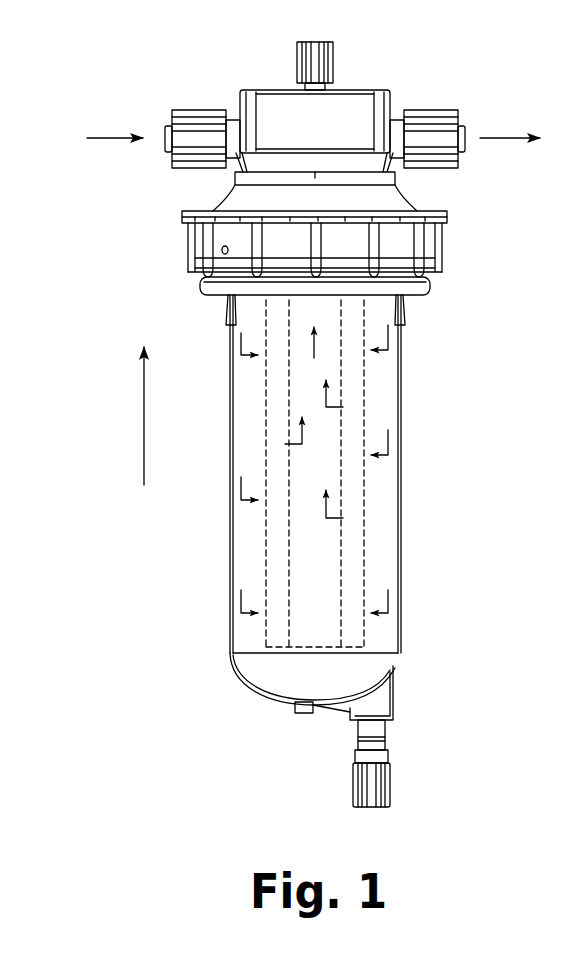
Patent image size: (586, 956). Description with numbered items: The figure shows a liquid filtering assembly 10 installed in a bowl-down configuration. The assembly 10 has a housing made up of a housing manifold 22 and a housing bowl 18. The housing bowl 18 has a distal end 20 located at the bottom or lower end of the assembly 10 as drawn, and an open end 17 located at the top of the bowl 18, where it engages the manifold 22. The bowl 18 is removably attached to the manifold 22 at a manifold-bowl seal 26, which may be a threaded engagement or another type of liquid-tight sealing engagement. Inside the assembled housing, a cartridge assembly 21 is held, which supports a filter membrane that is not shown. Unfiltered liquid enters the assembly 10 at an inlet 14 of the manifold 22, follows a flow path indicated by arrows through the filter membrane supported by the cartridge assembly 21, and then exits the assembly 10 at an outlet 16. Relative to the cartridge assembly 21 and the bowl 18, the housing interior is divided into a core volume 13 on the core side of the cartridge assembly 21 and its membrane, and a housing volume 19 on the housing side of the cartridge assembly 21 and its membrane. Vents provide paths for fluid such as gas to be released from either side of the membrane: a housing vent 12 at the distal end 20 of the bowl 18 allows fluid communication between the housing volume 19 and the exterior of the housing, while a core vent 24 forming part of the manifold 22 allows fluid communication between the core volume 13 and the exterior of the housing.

The liquid filtering assembly 10 is at (128, 68).
The housing vent 12 is at (365, 781).
The core volume 13 is at (310, 577).
The inlet 14 is at (185, 142).
The outlet 16 is at (445, 152).
The open end 17 is at (186, 236).
The housing bowl 18 is at (403, 452).
The housing volume 19 is at (243, 428).
The distal end 20 is at (415, 765).
The cartridge assembly 21 is at (352, 541).
The housing manifold 22 is at (400, 72).
The core vent 24 is at (320, 62).
The manifold-bowl seal 26 is at (450, 283).